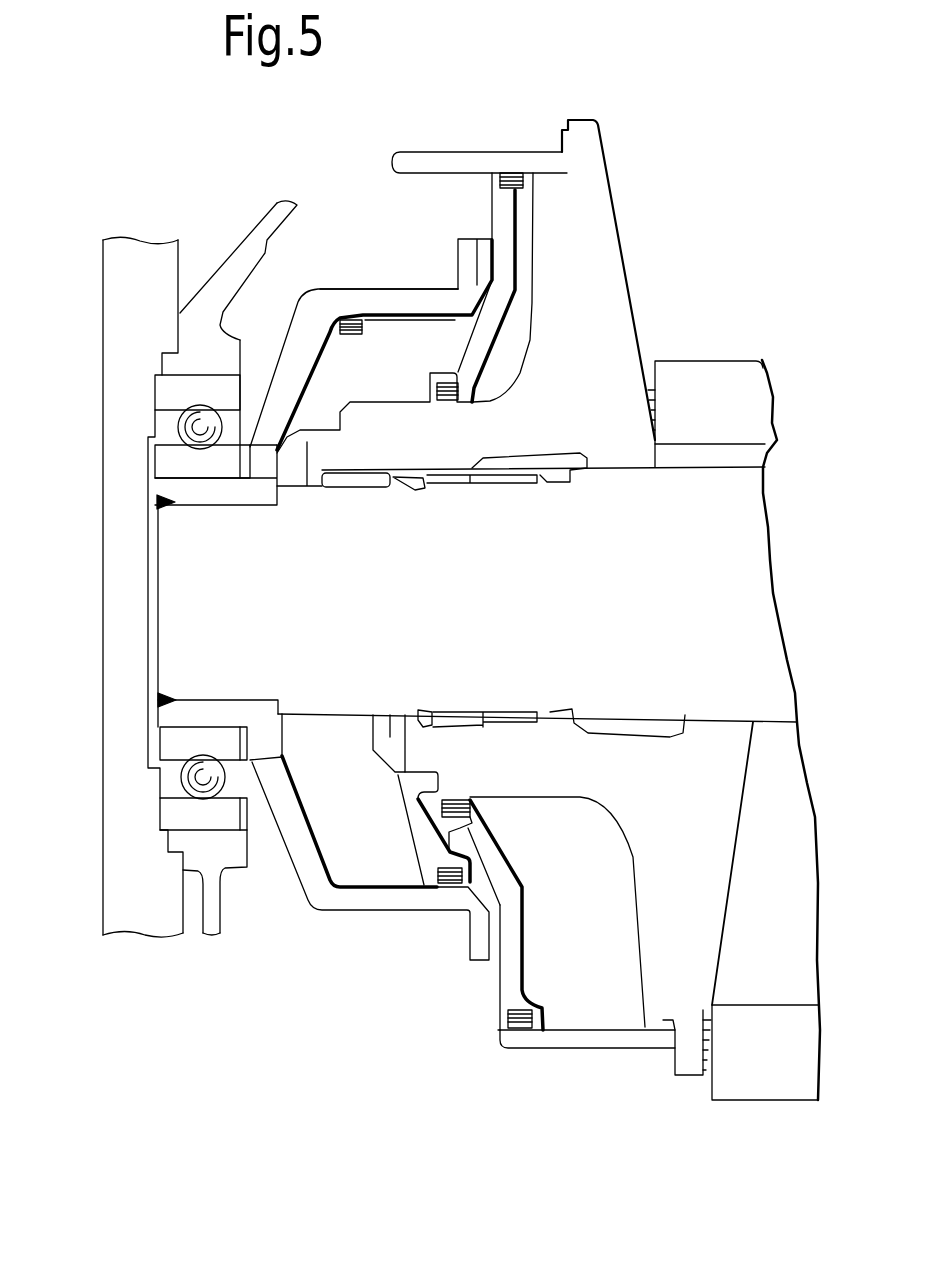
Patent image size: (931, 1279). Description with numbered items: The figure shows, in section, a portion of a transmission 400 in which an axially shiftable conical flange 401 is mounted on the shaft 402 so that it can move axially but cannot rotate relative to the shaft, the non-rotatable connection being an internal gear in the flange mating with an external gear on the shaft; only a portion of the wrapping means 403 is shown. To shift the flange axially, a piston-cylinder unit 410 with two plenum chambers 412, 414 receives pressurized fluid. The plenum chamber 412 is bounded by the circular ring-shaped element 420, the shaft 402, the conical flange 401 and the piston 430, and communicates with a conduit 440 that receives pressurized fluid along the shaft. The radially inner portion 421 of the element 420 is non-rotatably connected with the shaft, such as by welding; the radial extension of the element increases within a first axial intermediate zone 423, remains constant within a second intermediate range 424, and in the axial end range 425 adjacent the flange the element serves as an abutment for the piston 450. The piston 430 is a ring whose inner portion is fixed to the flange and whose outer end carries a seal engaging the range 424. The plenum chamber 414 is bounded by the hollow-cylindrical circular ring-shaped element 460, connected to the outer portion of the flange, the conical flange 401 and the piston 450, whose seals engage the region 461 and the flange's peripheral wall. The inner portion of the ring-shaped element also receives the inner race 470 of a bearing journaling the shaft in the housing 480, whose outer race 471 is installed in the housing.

The transmission 400 is at (716, 162).
The axially shiftable conical flange 401 is at (610, 270).
The shaft 402 is at (720, 547).
The wrapping means 403 is at (715, 368).
The piston-cylinder unit 410 is at (355, 232).
The plenum chamber 412 is at (322, 318).
The plenum chamber 414 is at (528, 233).
The circular ring-shaped element 420 is at (298, 853).
The radially inner portion 421 is at (215, 495).
The first axial intermediate zone 423 is at (283, 355).
The second intermediate range 424 is at (383, 295).
The axial end range 425 is at (465, 262).
The piston 430 is at (430, 857).
The conduit 440 is at (390, 737).
The piston 450 is at (485, 347).
The circular ring-shaped element 460 is at (640, 1038).
The region 461 is at (462, 172).
The inner race 470 is at (176, 458).
The outer race 471 is at (166, 390).
The housing 480 is at (135, 891).